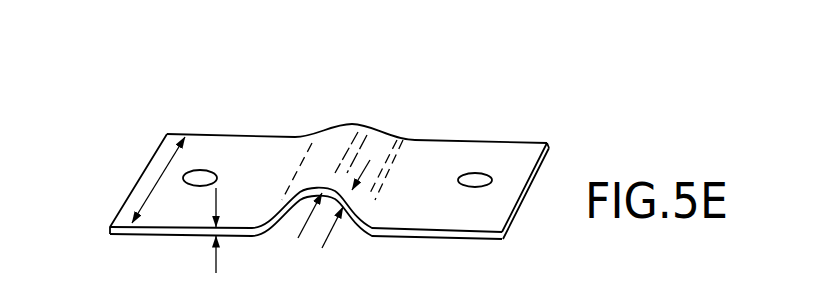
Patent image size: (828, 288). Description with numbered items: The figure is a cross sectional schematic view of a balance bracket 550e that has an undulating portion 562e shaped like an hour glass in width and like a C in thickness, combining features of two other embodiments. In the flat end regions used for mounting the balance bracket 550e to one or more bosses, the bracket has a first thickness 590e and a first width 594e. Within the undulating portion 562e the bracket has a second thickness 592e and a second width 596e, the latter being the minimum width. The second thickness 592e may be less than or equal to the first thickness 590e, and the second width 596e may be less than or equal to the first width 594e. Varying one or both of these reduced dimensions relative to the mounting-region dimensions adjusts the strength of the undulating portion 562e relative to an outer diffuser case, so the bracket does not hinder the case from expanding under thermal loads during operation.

The balance bracket 550e is at (160, 146).
The undulating portion 562e is at (395, 120).
The first thickness 590e is at (216, 270).
The second thickness 592e is at (334, 230).
The first width 594e is at (150, 190).
The second width 596e is at (383, 78).